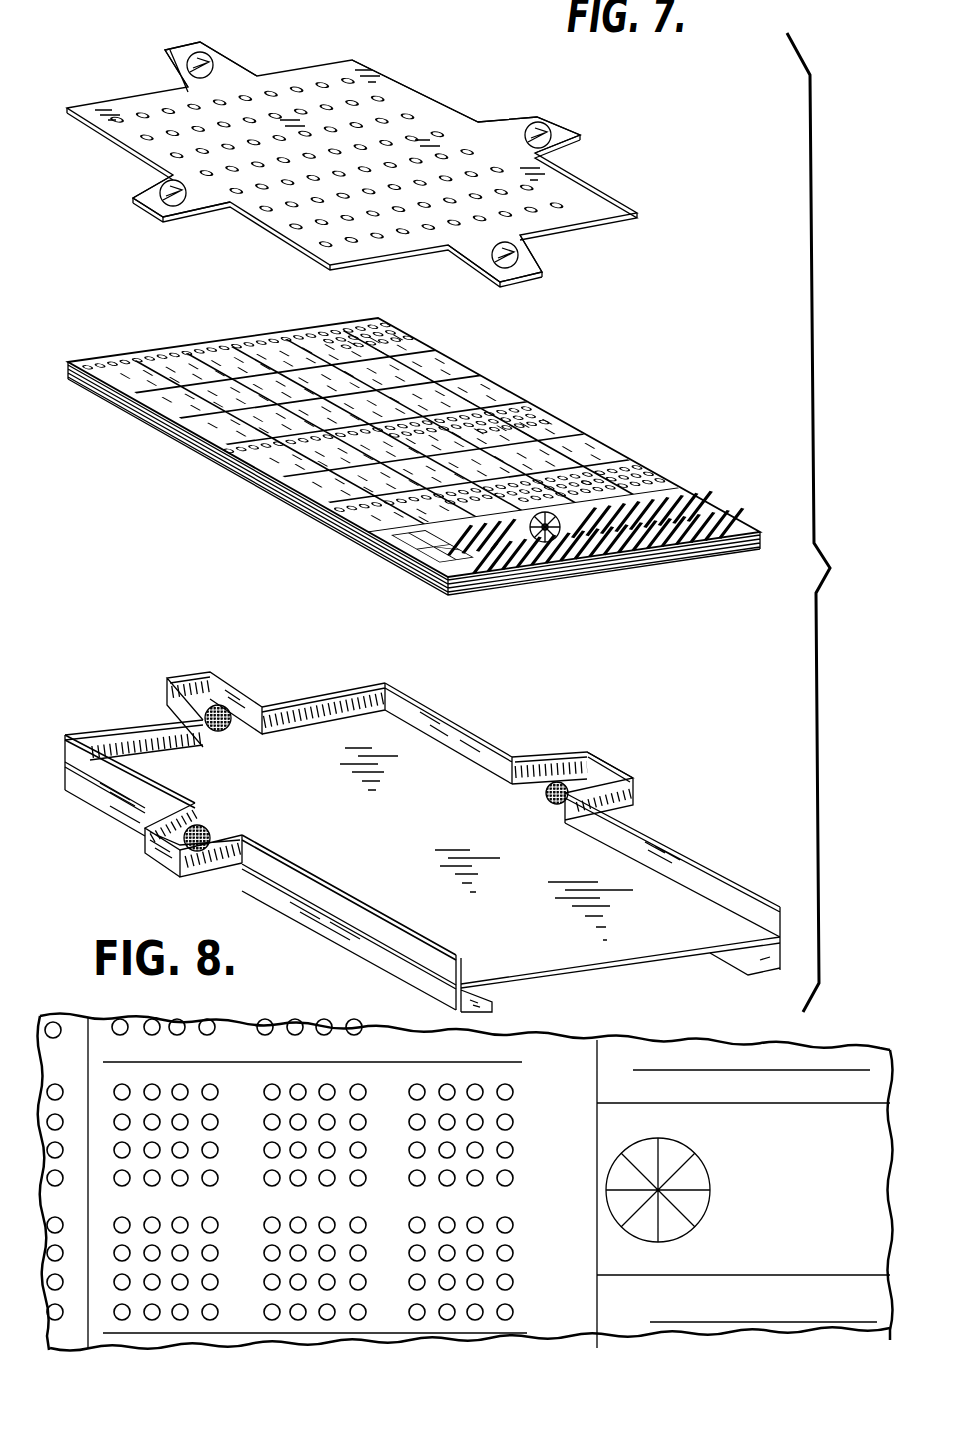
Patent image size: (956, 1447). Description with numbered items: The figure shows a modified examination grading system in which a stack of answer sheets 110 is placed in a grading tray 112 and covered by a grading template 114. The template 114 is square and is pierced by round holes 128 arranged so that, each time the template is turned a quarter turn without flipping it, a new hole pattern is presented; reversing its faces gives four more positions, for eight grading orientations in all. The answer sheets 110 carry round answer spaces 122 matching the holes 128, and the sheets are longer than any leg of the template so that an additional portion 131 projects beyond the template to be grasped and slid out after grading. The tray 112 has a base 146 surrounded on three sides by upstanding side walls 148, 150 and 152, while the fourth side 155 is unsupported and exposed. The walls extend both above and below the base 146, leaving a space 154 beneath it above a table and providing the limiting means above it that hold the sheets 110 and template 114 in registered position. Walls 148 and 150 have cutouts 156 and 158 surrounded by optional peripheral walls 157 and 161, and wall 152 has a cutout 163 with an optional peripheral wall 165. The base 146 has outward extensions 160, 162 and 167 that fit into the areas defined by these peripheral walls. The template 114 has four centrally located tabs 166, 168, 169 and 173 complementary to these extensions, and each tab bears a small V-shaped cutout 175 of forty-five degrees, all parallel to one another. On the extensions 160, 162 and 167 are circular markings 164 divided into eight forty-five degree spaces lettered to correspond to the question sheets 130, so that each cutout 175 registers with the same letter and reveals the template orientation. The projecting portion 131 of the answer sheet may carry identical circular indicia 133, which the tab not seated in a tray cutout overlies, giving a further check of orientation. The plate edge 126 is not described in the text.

In FIG. 7, the answer sheets 110 is at (424, 464).
In FIG. 7, the grading tray 112 is at (422, 824).
In FIG. 7, the grading template 114 is at (352, 152).
In FIG. 8, the answer spaces 122 is at (146, 1088).
In FIG. 7, the plate edge 126 is at (378, 63).
In FIG. 7, the holes 128 is at (354, 88).
In FIG. 8, the question sheets 130 is at (465, 1183).
In FIG. 8, the additional portion of answer sheet 131 is at (743, 1196).
In FIG. 7, the circularly arranged indicia 133 is at (561, 538).
In FIG. 8, the circularly arranged indicia 133 is at (707, 1158).
In FIG. 7, the base 146 is at (413, 826).
In FIG. 7, the side wall 148 is at (390, 930).
In FIG. 7, the side wall 150 is at (452, 733).
In FIG. 7, the side wall 152 is at (135, 724).
In FIG. 7, the space 154 is at (717, 958).
In FIG. 7, the side 155 is at (548, 972).
In FIG. 7, the cutout 156 is at (212, 855).
In FIG. 7, the peripheral wall 157 is at (148, 852).
In FIG. 7, the cutout 158 is at (574, 760).
In FIG. 7, the outward extension 160 is at (184, 835).
In FIG. 7, the peripheral wall 161 is at (613, 766).
In FIG. 7, the outward extension 162 is at (538, 792).
In FIG. 7, the cutout 163 is at (245, 705).
In FIG. 7, the markings 164 is at (222, 833).
In FIG. 7, the peripheral wall 165 is at (200, 672).
In FIG. 7, the tab 166 is at (203, 198).
In FIG. 7, the outward extension 167 is at (230, 733).
In FIG. 7, the tab 168 is at (573, 132).
In FIG. 7, the tab 169 is at (190, 46).
In FIG. 7, the tab 173 is at (530, 263).
In FIG. 7, the V-shaped cutout 175 is at (214, 59).